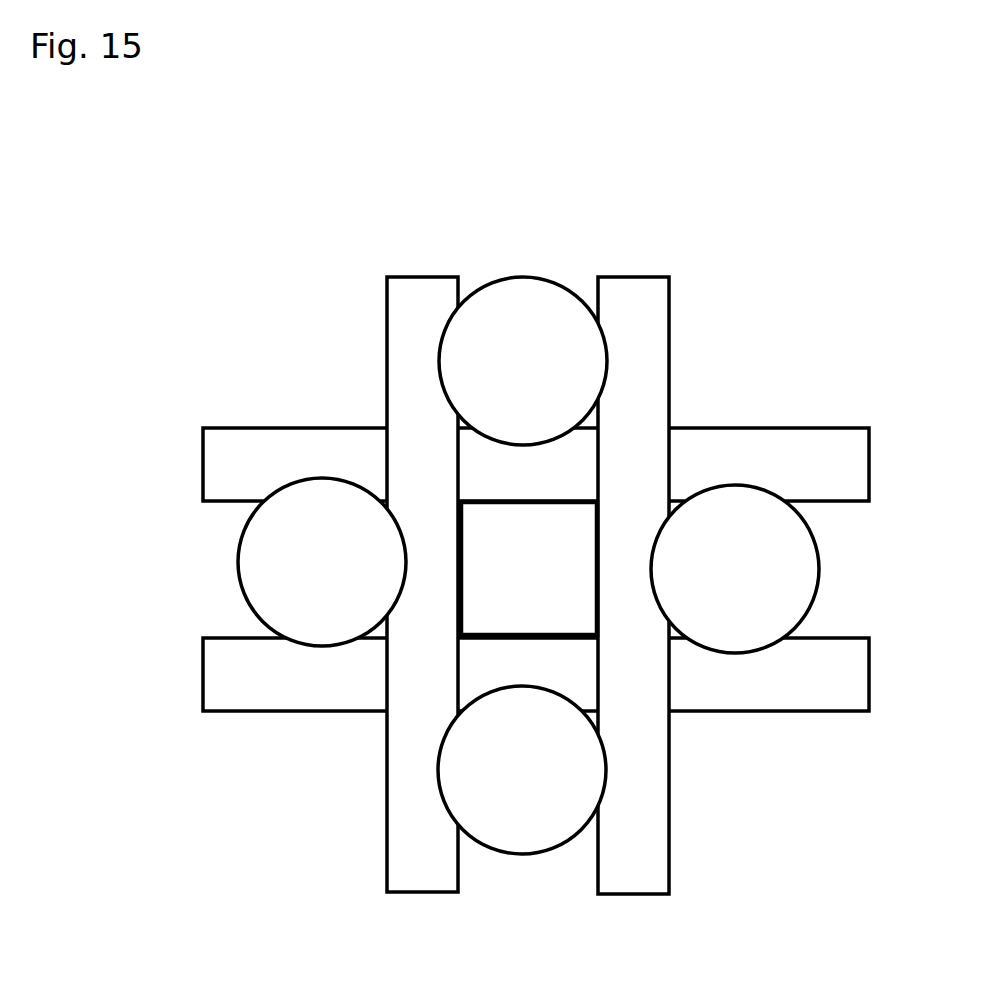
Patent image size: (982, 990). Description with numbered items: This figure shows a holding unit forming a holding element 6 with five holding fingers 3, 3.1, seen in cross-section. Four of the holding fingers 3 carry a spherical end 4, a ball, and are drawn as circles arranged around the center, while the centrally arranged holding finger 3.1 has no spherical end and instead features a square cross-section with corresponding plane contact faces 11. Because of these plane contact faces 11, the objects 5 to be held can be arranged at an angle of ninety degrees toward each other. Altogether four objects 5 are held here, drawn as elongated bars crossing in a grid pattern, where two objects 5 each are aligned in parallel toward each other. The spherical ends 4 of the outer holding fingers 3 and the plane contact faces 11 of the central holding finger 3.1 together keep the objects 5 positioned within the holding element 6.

The holding element 6 is at (318, 250).
The object 5 is at (408, 412).
The holding finger 3 is at (556, 565).
The spherical end, ball 4 is at (547, 372).
The holding finger without spherical end 3.1 is at (529, 568).
The plane contact face 11 is at (592, 535).